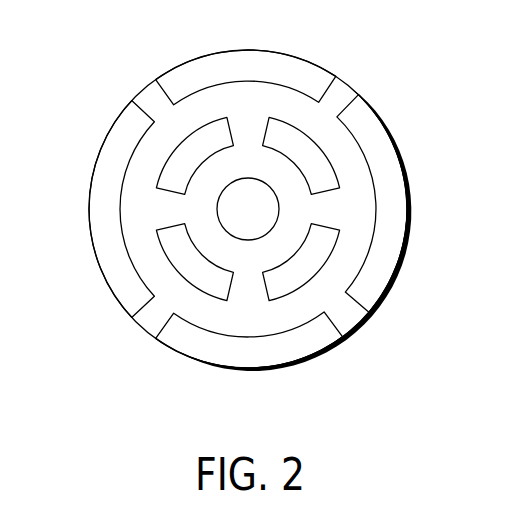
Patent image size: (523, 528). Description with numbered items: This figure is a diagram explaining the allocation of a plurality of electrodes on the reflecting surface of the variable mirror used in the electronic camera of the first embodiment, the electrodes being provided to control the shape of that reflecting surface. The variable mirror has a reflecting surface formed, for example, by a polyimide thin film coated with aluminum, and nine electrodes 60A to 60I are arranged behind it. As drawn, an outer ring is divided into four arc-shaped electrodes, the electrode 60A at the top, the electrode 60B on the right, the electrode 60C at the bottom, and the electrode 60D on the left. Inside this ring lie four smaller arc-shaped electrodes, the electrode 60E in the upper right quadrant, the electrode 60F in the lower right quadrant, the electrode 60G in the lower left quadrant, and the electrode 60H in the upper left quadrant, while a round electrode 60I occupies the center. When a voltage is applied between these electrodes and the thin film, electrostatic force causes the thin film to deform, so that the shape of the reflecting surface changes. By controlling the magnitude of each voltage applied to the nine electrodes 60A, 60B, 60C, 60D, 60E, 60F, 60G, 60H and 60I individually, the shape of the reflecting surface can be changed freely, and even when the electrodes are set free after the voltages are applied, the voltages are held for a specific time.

The electrode 60A is at (297, 50).
The electrode 60B is at (411, 209).
The electrode 60C is at (318, 358).
The electrode 60D is at (89, 209).
The electrode 60E is at (365, 192).
The electrode 60F is at (327, 263).
The electrode 60G is at (170, 267).
The electrode 60H is at (168, 155).
The electrode 60I is at (224, 229).